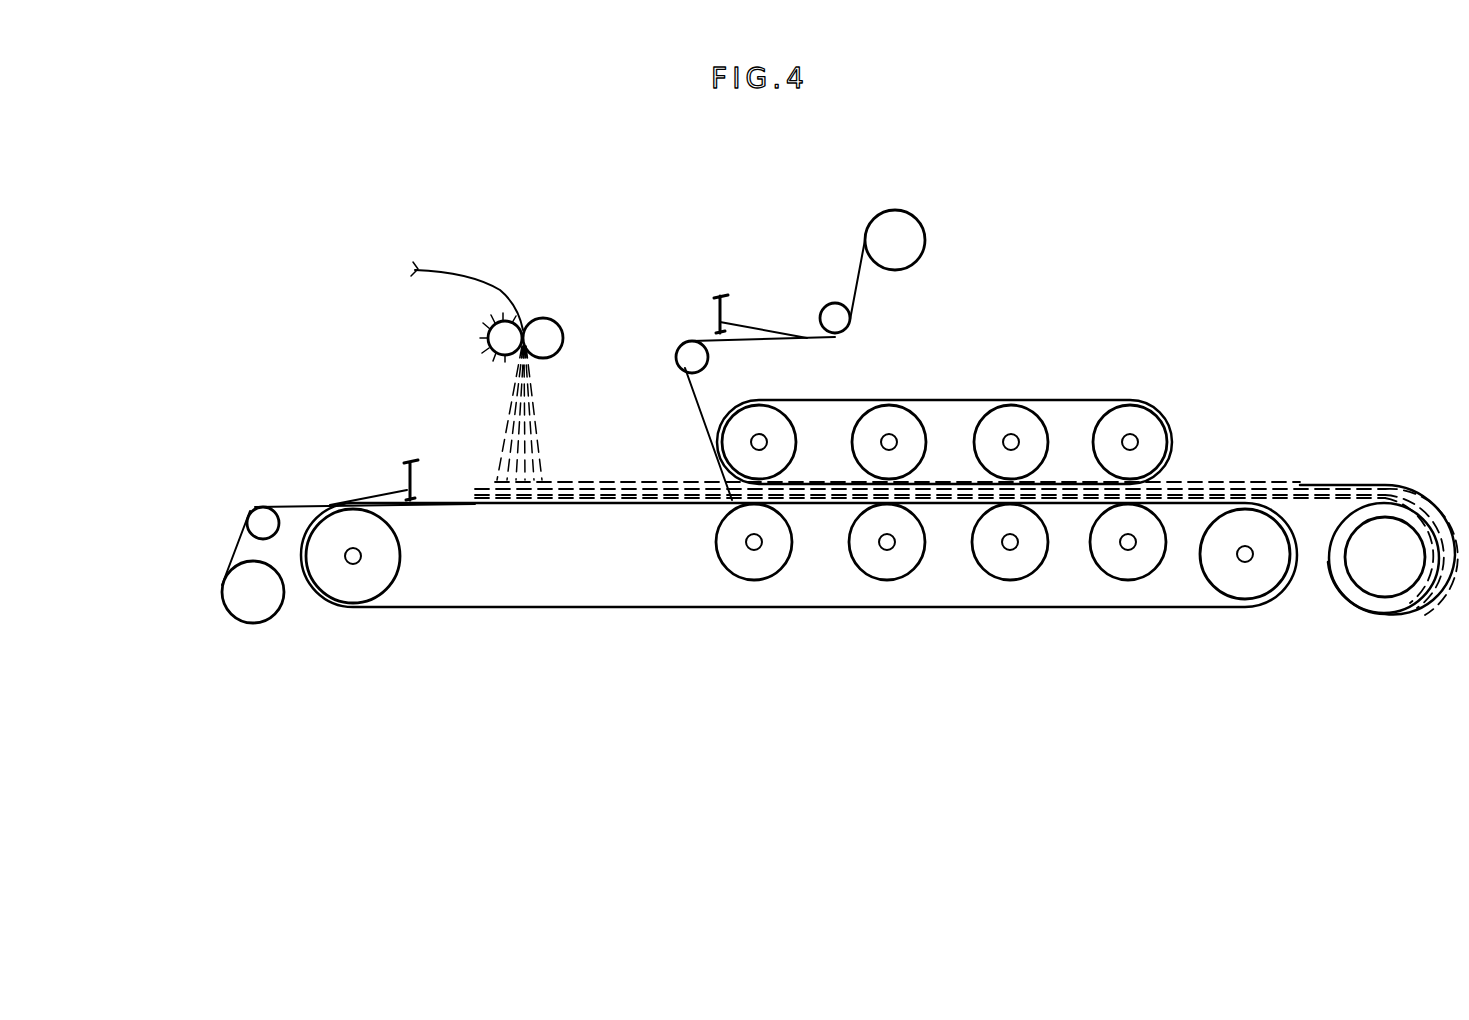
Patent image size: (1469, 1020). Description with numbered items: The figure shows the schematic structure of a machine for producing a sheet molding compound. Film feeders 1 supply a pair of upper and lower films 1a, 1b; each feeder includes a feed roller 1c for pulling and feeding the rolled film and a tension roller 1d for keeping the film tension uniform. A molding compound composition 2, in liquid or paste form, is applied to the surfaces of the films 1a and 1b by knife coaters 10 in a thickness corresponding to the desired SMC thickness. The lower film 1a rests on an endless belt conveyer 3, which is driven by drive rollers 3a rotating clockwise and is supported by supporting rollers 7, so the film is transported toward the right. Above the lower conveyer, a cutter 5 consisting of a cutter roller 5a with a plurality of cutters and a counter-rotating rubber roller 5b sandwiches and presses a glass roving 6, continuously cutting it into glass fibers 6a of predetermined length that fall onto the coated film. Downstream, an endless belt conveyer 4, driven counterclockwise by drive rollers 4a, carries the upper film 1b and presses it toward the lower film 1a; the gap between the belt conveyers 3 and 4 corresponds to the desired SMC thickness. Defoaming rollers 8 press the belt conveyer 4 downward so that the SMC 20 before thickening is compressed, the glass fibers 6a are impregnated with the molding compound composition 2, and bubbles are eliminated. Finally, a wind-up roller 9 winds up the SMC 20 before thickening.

The film feeder 1 is at (591, 419).
The lower film 1a is at (308, 505).
The upper film 1b is at (863, 247).
The feed roller 1c is at (260, 597).
The tension roller 1d is at (260, 520).
The molding compound composition 2 is at (373, 483).
The endless belt conveyer 3 is at (967, 607).
The drive roller 3a is at (372, 577).
The endless belt conveyer 4 is at (1072, 398).
The drive roller 4a is at (777, 427).
The cutter 5 is at (514, 279).
The cutter roller 5a is at (490, 343).
The rubber roller 5b is at (553, 338).
The glass roving 6 is at (478, 268).
The glass fiber 6a is at (537, 427).
The supporting roller 7 is at (873, 563).
The defoaming roller 8 is at (995, 440).
The wind-up roller 9 is at (1368, 573).
The knife coater 10 is at (413, 470).
The SMC 20 is at (828, 503).